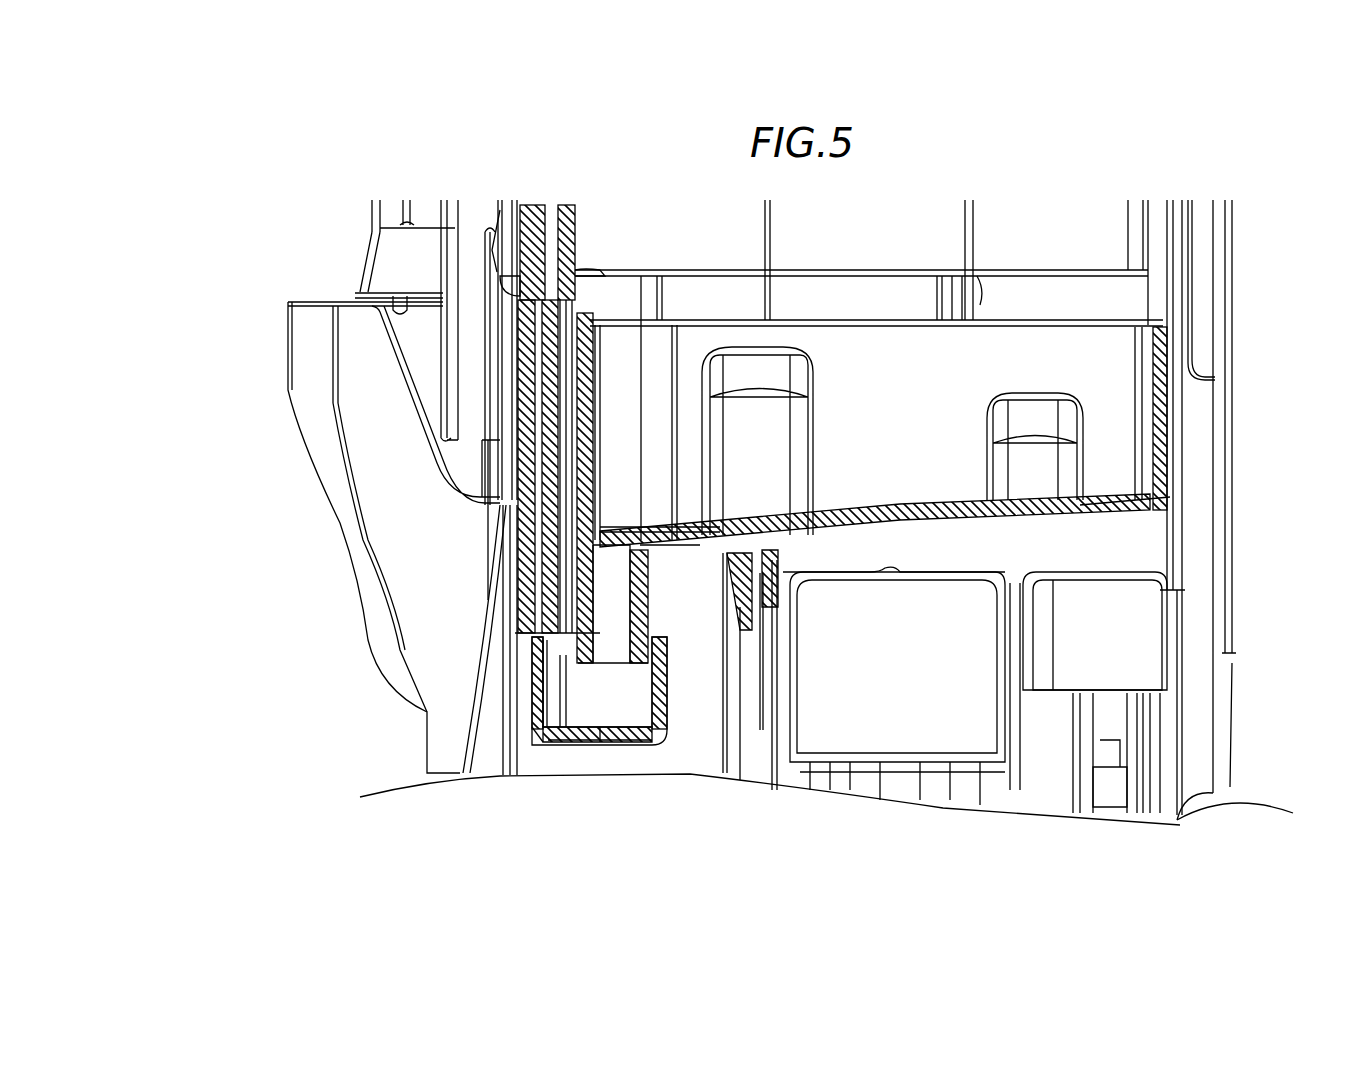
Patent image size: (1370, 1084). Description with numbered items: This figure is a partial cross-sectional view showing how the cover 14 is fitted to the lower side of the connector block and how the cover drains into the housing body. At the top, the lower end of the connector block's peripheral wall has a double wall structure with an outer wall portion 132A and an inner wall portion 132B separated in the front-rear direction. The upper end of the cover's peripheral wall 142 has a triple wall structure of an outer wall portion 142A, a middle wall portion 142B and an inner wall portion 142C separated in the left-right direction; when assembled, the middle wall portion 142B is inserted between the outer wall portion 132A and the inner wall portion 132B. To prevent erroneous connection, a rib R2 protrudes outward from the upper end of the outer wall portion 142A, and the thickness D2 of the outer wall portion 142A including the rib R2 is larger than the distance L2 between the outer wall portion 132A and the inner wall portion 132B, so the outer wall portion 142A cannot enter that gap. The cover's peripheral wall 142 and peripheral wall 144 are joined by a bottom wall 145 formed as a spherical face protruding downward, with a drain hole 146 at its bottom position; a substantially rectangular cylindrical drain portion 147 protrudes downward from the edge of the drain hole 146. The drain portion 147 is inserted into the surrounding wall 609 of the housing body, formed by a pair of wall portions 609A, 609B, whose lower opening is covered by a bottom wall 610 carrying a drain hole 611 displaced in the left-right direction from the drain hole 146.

The cover 14 is at (1193, 415).
The peripheral wall 144 is at (1160, 447).
The bottom wall 145 is at (1085, 520).
The drain hole 146 is at (618, 545).
The drain portion 147 is at (633, 667).
The peripheral wall 142 is at (513, 484).
The outer wall portion 142A is at (513, 521).
The middle wall portion 142B is at (513, 548).
The inner wall portion 142C is at (513, 574).
The outer wall portion 132A is at (513, 371).
The inner wall portion 132B is at (513, 406).
The surrounding wall 609 is at (528, 667).
The wall portion 609A is at (533, 682).
The wall portion 609B is at (670, 688).
The bottom wall 610 is at (607, 745).
The drain hole 611 is at (572, 745).
The rib R2 is at (500, 292).
The thickness D2 is at (555, 190).
The distance L2 is at (515, 808).